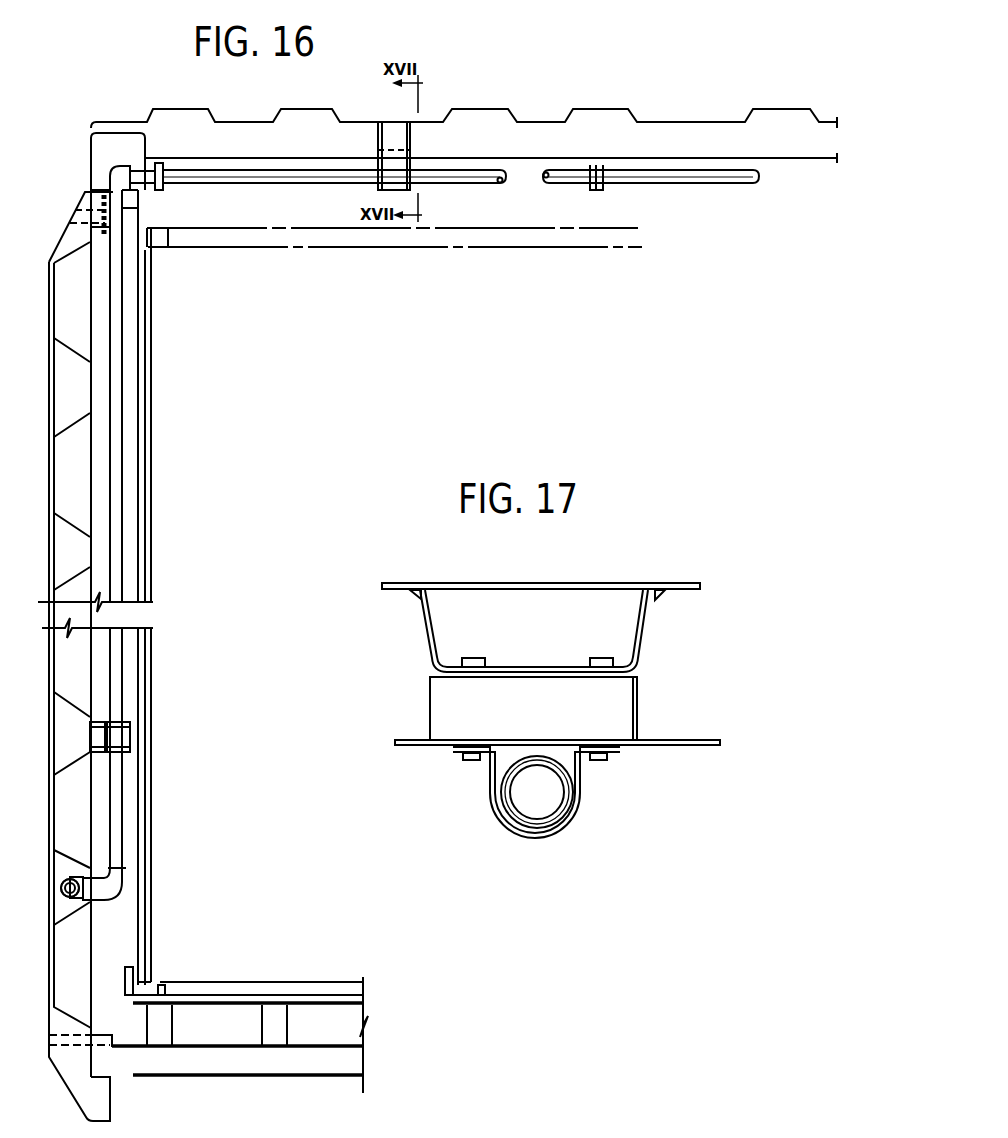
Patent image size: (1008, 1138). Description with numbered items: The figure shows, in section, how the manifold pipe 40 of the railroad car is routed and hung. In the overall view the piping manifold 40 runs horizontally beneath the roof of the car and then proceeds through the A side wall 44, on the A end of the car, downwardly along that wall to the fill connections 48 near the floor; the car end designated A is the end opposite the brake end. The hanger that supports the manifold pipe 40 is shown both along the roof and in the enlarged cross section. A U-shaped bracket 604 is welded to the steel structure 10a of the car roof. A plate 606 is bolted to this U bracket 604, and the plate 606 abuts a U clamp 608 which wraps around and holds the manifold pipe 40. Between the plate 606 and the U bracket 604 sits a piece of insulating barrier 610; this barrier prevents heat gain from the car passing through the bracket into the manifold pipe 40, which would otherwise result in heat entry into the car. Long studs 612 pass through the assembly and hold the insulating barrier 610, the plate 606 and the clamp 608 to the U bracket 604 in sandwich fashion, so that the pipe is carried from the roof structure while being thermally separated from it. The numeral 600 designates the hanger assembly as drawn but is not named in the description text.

In FIG. 16, the A side wall 44 is at (88, 164).
In FIG. 16, the A end A is at (44, 292).
In FIG. 16, the manifold pipe 40 is at (308, 173).
In FIG. 17, the manifold pipe 40 is at (550, 791).
In FIG. 16, the pipe hanger assembly 600 is at (410, 160).
In FIG. 17, the pipe hanger assembly 600 is at (672, 714).
In FIG. 16, the fill connections 48 is at (61, 888).
In FIG. 17, the steel structure of the roof 10a is at (600, 588).
In FIG. 17, the U-shaped bracket 604 is at (653, 626).
In FIG. 17, the long studs 612 is at (480, 657).
In FIG. 17, the insulating barrier 610 is at (638, 693).
In FIG. 17, the plate 606 is at (685, 739).
In FIG. 17, the U clamp 608 is at (579, 800).